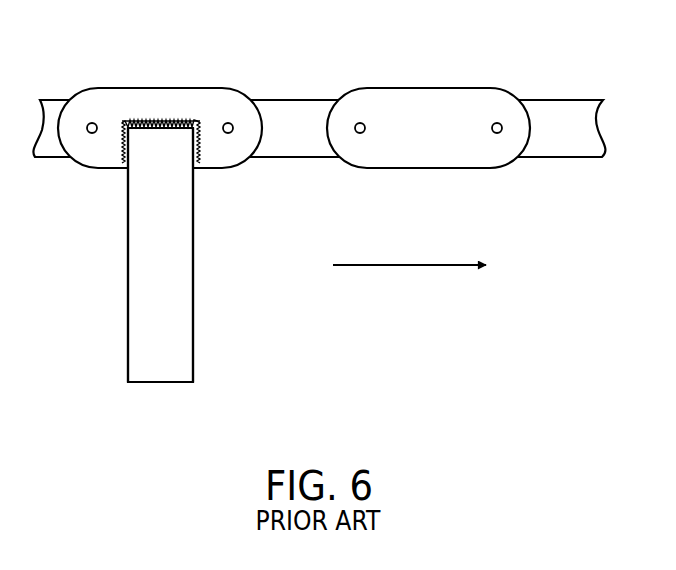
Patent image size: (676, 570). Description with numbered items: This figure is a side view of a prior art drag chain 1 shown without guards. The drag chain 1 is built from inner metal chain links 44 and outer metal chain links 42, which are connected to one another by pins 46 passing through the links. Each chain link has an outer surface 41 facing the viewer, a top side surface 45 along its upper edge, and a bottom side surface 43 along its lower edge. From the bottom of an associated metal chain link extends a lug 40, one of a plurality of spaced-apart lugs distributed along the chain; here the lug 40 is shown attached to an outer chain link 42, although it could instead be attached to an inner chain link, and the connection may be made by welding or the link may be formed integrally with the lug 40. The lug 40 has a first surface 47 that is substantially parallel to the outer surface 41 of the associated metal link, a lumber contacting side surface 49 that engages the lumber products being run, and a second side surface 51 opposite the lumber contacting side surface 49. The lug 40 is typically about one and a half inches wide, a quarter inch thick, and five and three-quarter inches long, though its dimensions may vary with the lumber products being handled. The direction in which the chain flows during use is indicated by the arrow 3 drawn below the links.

The drag chain 1 is at (319, 137).
The arrow 3 is at (412, 267).
The lug 40 is at (160, 283).
The outer surface 41 is at (436, 130).
The outer metal chain link 42 is at (428, 153).
The bottom side surface 43 is at (387, 172).
The inner metal chain link 44 is at (310, 158).
The top side surface 45 is at (432, 84).
The pin 46 is at (496, 124).
The first surface 47 is at (171, 269).
The lumber contacting side surface 49 is at (197, 353).
The second side surface 51 is at (126, 285).